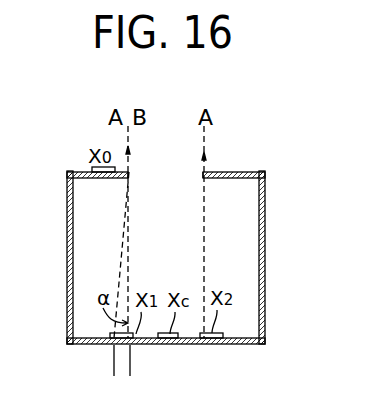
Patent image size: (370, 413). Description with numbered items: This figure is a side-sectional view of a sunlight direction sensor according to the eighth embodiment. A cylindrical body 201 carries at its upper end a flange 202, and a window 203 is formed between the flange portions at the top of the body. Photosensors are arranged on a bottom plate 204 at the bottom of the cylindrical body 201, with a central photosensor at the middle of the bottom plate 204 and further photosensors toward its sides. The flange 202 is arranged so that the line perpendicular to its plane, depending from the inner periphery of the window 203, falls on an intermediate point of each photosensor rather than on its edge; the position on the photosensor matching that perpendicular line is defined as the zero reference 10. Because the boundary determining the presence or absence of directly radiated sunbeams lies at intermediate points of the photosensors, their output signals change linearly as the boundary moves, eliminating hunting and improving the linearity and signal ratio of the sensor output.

The cylindrical body 201 is at (265, 220).
The flange 202 is at (77, 170).
The window 203 is at (165, 179).
The bottom plate 204 is at (228, 345).
The sensing element 10 is at (129, 378).